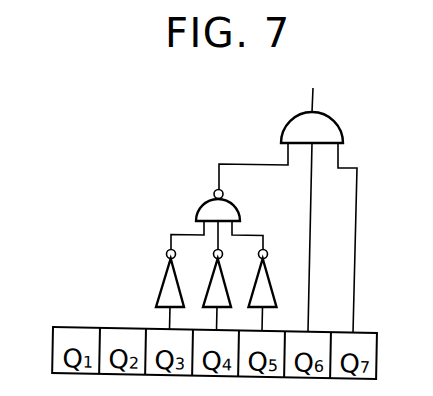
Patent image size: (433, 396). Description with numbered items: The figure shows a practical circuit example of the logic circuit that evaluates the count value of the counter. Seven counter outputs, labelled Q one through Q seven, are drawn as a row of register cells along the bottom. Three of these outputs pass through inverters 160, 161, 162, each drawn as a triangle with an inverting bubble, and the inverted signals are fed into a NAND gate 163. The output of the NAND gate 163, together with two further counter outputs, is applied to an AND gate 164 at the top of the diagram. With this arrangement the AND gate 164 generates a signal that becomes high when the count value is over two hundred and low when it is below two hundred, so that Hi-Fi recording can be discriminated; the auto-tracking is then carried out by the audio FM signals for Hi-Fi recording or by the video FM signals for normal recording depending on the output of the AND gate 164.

The inverter 160 is at (167, 270).
The inverter 161 is at (207, 293).
The inverter 162 is at (268, 275).
The NAND gate 163 is at (236, 204).
The AND gate 164 is at (339, 124).